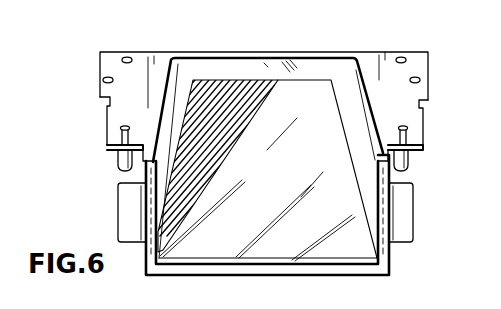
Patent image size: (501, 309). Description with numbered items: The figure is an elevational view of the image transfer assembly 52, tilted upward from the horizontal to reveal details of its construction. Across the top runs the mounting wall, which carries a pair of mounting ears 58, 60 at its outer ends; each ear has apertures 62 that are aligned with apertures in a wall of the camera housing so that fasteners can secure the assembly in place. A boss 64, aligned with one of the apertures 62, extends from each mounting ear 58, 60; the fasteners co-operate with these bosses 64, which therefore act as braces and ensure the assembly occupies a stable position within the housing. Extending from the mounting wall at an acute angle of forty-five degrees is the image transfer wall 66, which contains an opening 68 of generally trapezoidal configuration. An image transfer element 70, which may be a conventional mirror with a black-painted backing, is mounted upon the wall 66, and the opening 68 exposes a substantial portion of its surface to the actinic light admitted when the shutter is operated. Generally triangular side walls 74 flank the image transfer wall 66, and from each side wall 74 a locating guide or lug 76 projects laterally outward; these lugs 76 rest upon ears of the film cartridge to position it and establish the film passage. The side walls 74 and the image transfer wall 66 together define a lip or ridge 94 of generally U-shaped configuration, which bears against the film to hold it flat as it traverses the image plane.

The image transfer assembly 52 is at (318, 48).
The mounting ear 58 is at (112, 113).
The mounting ear 60 is at (421, 86).
The apertures 62 is at (414, 77).
The boss 64 is at (121, 158).
The image transfer wall 66 is at (247, 60).
The opening or aperture 68 is at (218, 79).
The image transfer element 70 is at (296, 179).
The side walls 74 is at (367, 132).
The locating or positioning guides or lugs 76 is at (123, 213).
The lip or ridge 94 is at (295, 277).